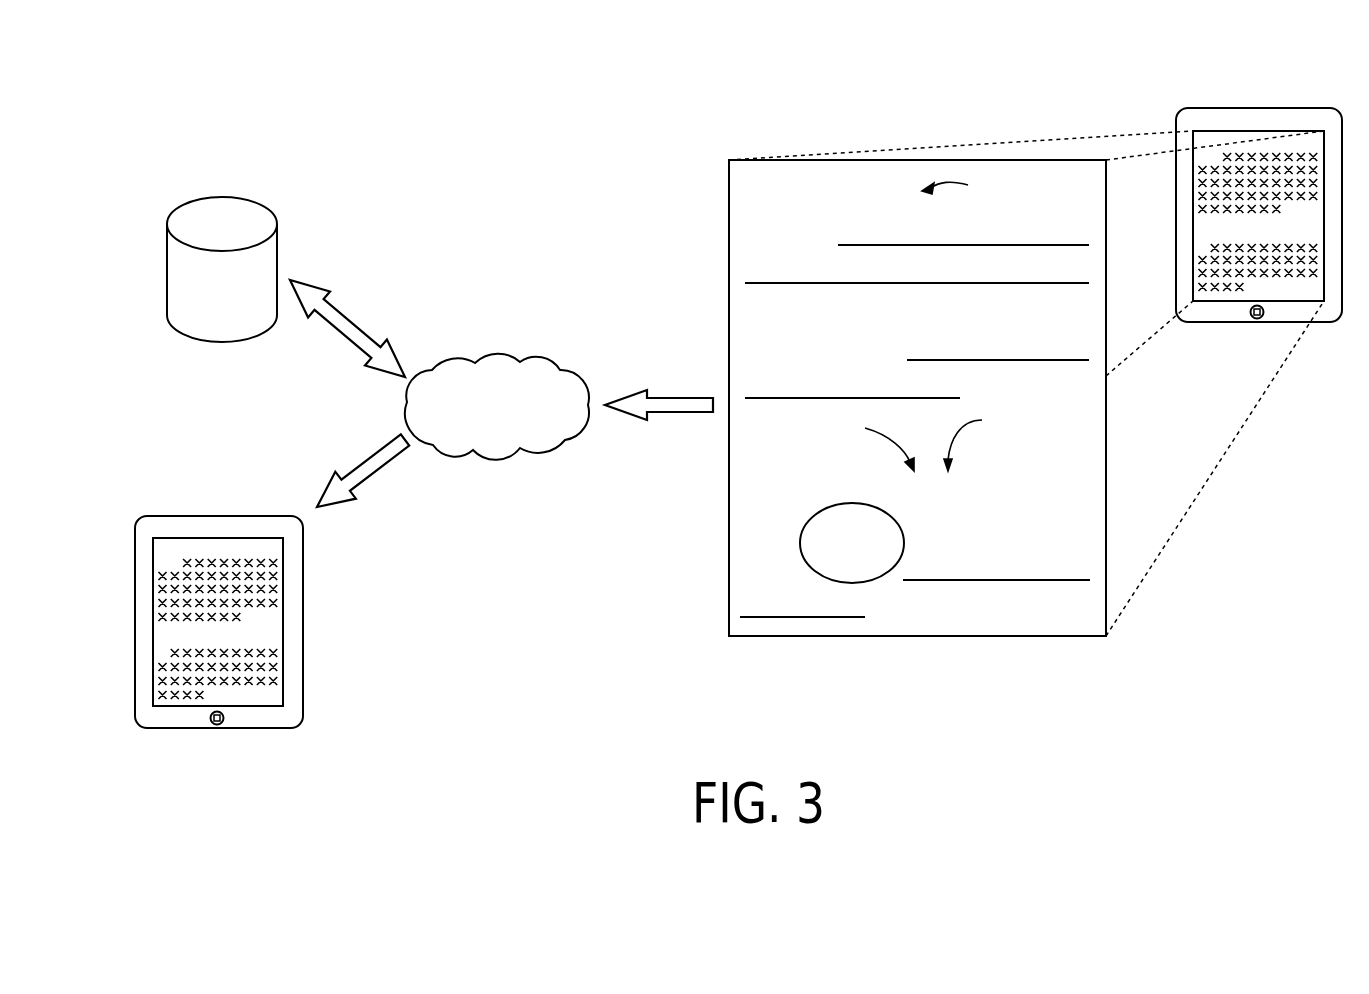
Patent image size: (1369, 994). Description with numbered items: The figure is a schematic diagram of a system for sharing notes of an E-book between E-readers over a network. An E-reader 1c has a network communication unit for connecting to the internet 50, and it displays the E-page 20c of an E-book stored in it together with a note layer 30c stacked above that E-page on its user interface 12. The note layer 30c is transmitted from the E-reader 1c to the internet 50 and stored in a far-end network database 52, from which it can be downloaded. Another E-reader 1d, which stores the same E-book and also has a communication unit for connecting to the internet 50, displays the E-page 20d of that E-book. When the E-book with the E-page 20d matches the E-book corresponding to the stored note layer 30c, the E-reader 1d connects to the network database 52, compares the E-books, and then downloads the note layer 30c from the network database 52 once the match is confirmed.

The network database 52 is at (216, 212).
The internet 50 is at (495, 352).
The E-reader 1d is at (254, 583).
The E-page 20d is at (268, 552).
The note layer 30c is at (746, 212).
The E-reader 1c is at (1228, 213).
The E-page 20c is at (1213, 210).
The user interface 12 is at (1247, 290).